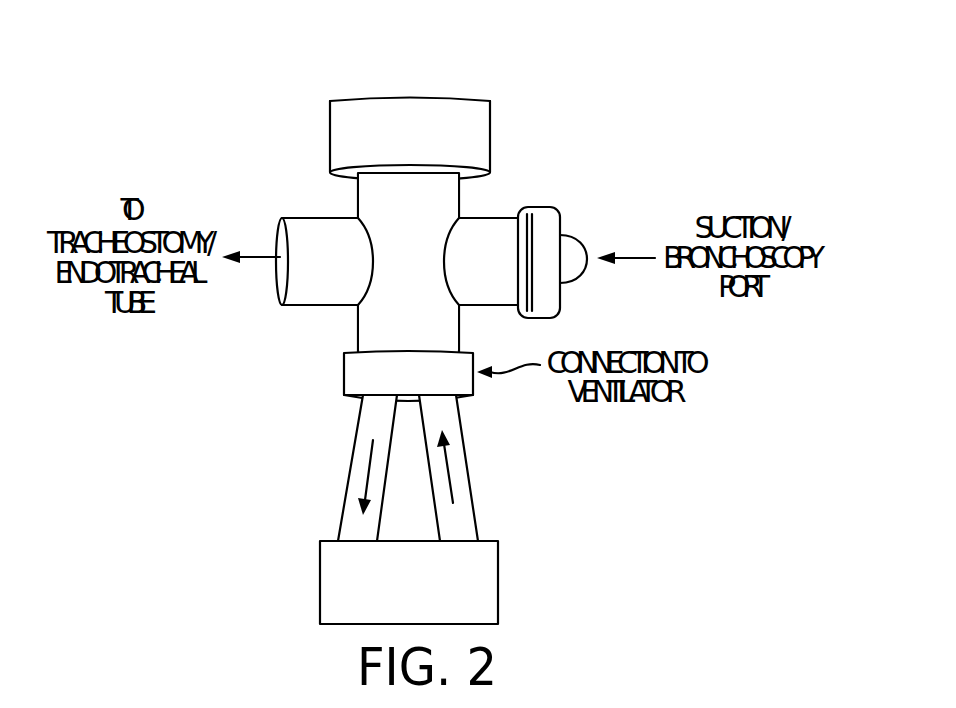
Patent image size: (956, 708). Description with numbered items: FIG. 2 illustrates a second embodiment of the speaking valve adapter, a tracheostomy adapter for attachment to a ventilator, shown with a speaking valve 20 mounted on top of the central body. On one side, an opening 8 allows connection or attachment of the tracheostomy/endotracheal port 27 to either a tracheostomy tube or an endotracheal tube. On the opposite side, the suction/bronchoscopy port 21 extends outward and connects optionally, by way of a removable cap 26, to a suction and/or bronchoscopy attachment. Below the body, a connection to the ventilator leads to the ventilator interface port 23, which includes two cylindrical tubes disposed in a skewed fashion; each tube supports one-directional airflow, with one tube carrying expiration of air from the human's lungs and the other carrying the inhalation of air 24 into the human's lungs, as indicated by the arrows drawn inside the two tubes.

The speaking valve 20 is at (417, 80).
The opening 8 is at (256, 216).
The tracheostomy/endotracheal port 27 is at (297, 307).
The removable cap 26 is at (546, 207).
The suction/bronchoscopy port 21 is at (590, 232).
The inhalation of air 24 is at (317, 475).
The ventilator interface port 23 is at (498, 580).